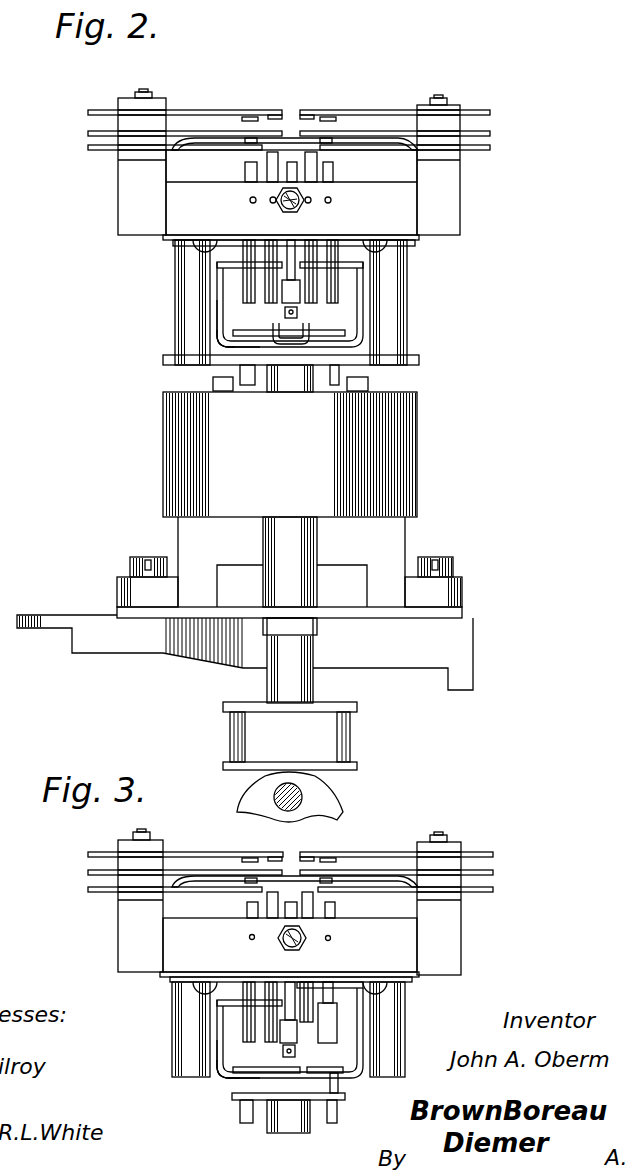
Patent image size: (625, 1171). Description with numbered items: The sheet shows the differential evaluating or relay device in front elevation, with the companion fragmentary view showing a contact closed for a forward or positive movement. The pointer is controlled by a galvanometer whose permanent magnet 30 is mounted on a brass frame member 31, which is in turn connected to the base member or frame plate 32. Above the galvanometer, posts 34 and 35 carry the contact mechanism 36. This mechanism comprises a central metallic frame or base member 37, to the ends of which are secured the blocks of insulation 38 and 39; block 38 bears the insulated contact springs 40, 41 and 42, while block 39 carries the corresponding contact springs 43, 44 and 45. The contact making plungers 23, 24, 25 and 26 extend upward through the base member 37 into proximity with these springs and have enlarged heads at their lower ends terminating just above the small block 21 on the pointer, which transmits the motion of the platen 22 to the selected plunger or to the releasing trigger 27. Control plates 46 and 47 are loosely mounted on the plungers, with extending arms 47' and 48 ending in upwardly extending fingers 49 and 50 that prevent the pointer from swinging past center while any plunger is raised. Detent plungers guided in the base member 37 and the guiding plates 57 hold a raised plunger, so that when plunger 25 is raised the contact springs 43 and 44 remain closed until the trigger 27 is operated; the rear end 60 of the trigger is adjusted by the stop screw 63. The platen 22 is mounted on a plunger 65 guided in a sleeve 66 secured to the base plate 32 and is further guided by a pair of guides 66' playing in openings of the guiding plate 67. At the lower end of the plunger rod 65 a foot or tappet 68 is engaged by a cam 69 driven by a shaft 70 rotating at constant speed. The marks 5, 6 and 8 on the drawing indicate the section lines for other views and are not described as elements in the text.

In FIG. 2, the section line 5 is at (348, 102).
In FIG. 2, the section line 6 is at (309, 85).
In FIG. 2, the section line 8 is at (108, 197).
In FIG. 2, the block 21 is at (282, 310).
In FIG. 3, the block 21 is at (297, 1050).
In FIG. 2, the platen 22 is at (220, 336).
In FIG. 3, the platen 22 is at (233, 1067).
In FIG. 2, the plunger 23 is at (245, 166).
In FIG. 3, the plunger 23 is at (231, 908).
In FIG. 2, the plunger 24 is at (273, 163).
In FIG. 3, the plunger 24 is at (277, 905).
In FIG. 2, the plunger 25 is at (318, 160).
In FIG. 3, the plunger 25 is at (306, 888).
In FIG. 2, the plunger 26 is at (333, 167).
In FIG. 3, the plunger 26 is at (335, 908).
In FIG. 2, the releasing trigger 27 is at (297, 293).
In FIG. 2, the permanent magnet 30 is at (402, 442).
In FIG. 2, the brass frame member 31 is at (390, 543).
In FIG. 2, the base member or frame plate 32 is at (370, 609).
In FIG. 2, the post 34 is at (390, 302).
In FIG. 2, the post 35 is at (178, 283).
In FIG. 3, the post 35 is at (180, 1007).
In FIG. 2, the contact mechanism 36 is at (105, 223).
In FIG. 2, the central metallic frame or base member 37 is at (180, 212).
In FIG. 3, the central metallic frame or base member 37 is at (183, 945).
In FIG. 2, the block of insulation 38 is at (125, 175).
In FIG. 3, the block of insulation 38 is at (125, 932).
In FIG. 2, the block of insulation 39 is at (450, 185).
In FIG. 3, the block of insulation 39 is at (452, 957).
In FIG. 2, the contact spring 40 is at (90, 112).
In FIG. 3, the contact spring 40 is at (90, 853).
In FIG. 2, the contact spring 41 is at (88, 133).
In FIG. 3, the contact spring 41 is at (88, 872).
In FIG. 2, the contact spring 42 is at (88, 147).
In FIG. 3, the contact spring 42 is at (88, 889).
In FIG. 2, the contact spring 43 is at (488, 118).
In FIG. 3, the contact spring 43 is at (493, 858).
In FIG. 2, the contact spring 44 is at (497, 128).
In FIG. 3, the contact spring 44 is at (495, 873).
In FIG. 2, the contact spring 45 is at (497, 144).
In FIG. 3, the contact spring 45 is at (495, 892).
In FIG. 2, the control plate 46 is at (237, 262).
In FIG. 3, the control plate 46 is at (233, 1000).
In FIG. 2, the control plate 47 is at (330, 261).
In FIG. 3, the control plate 47 is at (304, 977).
In FIG. 2, the extending arm 47' is at (176, 350).
In FIG. 3, the extending arm 47' is at (204, 1082).
In FIG. 2, the extending arm 48 is at (366, 338).
In FIG. 2, the finger 49 is at (306, 330).
In FIG. 3, the finger 49 is at (337, 1082).
In FIG. 2, the finger 50 is at (285, 314).
In FIG. 3, the finger 50 is at (283, 1050).
In FIG. 2, the guiding plate 57 is at (370, 136).
In FIG. 3, the guiding plate 57 is at (368, 882).
In FIG. 2, the rear end of the trigger 60 is at (291, 162).
In FIG. 3, the rear end of the trigger 60 is at (296, 893).
In FIG. 2, the stop screw 63 is at (308, 207).
In FIG. 3, the stop screw 63 is at (318, 942).
In FIG. 2, the plunger 65 is at (287, 680).
In FIG. 2, the sleeve 66 is at (313, 394).
In FIG. 3, the sleeve 66 is at (288, 1131).
In FIG. 3, the guide 66' is at (280, 1121).
In FIG. 3, the guiding plate 67 is at (345, 1098).
In FIG. 2, the foot or tappet 68 is at (352, 762).
In FIG. 2, the cam 69 is at (322, 750).
In FIG. 2, the shaft 70 is at (290, 785).